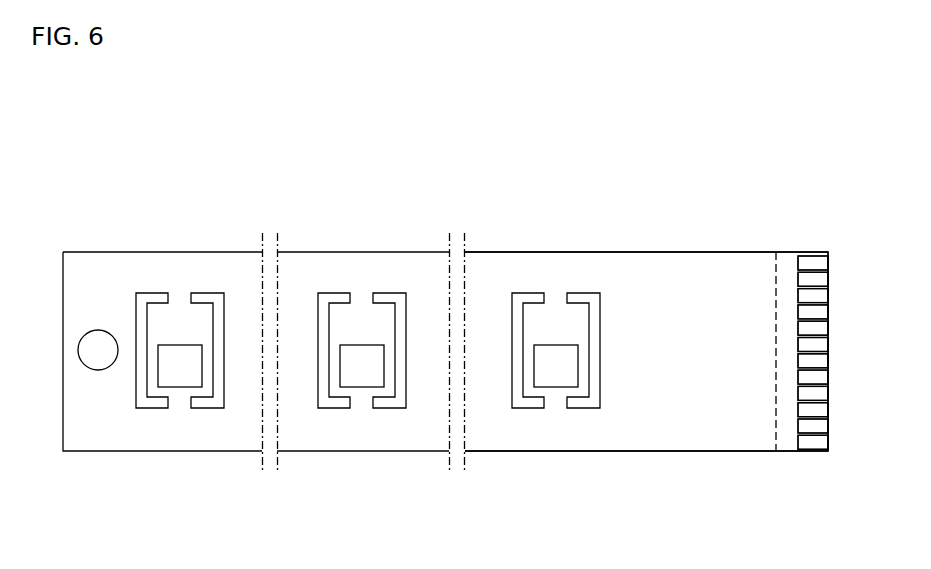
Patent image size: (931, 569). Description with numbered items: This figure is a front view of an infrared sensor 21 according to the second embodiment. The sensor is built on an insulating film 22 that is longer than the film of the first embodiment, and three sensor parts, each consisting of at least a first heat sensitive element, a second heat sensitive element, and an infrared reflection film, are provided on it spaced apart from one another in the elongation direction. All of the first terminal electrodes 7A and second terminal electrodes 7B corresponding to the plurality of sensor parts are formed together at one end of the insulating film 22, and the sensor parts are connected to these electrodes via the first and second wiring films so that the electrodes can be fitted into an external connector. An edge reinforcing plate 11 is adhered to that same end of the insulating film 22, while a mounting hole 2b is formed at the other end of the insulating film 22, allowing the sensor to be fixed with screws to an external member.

The mounting hole 2b is at (89, 331).
The first terminal electrodes 7A is at (814, 262).
The second terminal electrodes 7B is at (813, 352).
The edge reinforcing plate 11 is at (776, 393).
The infrared sensor 21 is at (480, 188).
The insulating film 22 is at (686, 252).